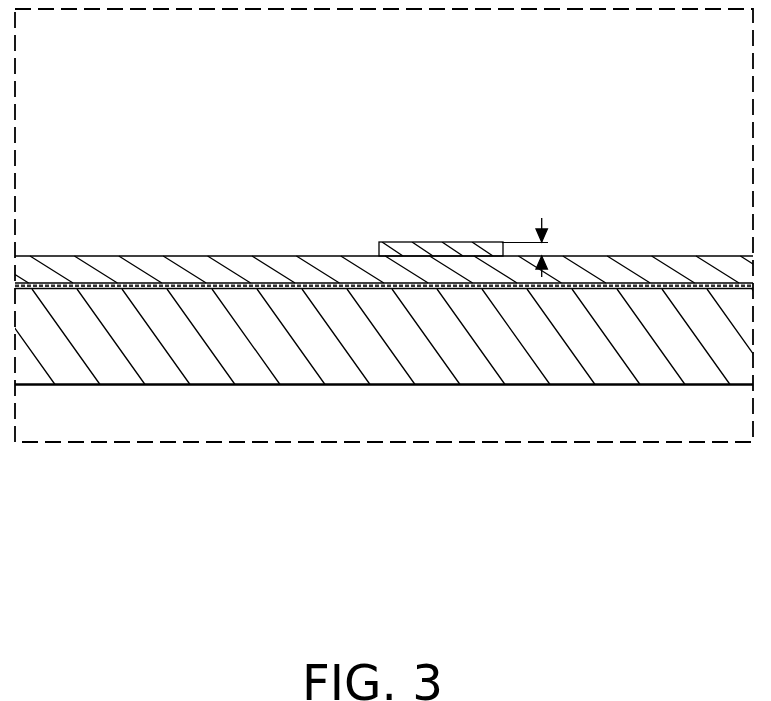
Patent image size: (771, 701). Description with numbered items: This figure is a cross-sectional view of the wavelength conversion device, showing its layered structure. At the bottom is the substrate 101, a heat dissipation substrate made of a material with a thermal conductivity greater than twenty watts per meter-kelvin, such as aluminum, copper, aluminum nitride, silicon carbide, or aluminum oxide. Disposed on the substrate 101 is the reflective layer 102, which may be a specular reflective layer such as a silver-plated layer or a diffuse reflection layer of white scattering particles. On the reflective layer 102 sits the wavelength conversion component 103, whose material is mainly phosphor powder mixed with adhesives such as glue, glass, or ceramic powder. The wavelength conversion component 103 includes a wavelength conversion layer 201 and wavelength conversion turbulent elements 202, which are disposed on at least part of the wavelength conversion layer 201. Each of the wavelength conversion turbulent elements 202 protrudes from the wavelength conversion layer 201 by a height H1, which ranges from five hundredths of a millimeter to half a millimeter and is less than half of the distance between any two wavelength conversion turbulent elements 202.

The substrate 101 is at (229, 362).
The reflective layer 102 is at (238, 283).
The wavelength conversion component 103 is at (448, 157).
The wavelength conversion layer 201 is at (350, 273).
The wavelength conversion turbulent elements 202 is at (425, 254).
The height H1 is at (543, 252).